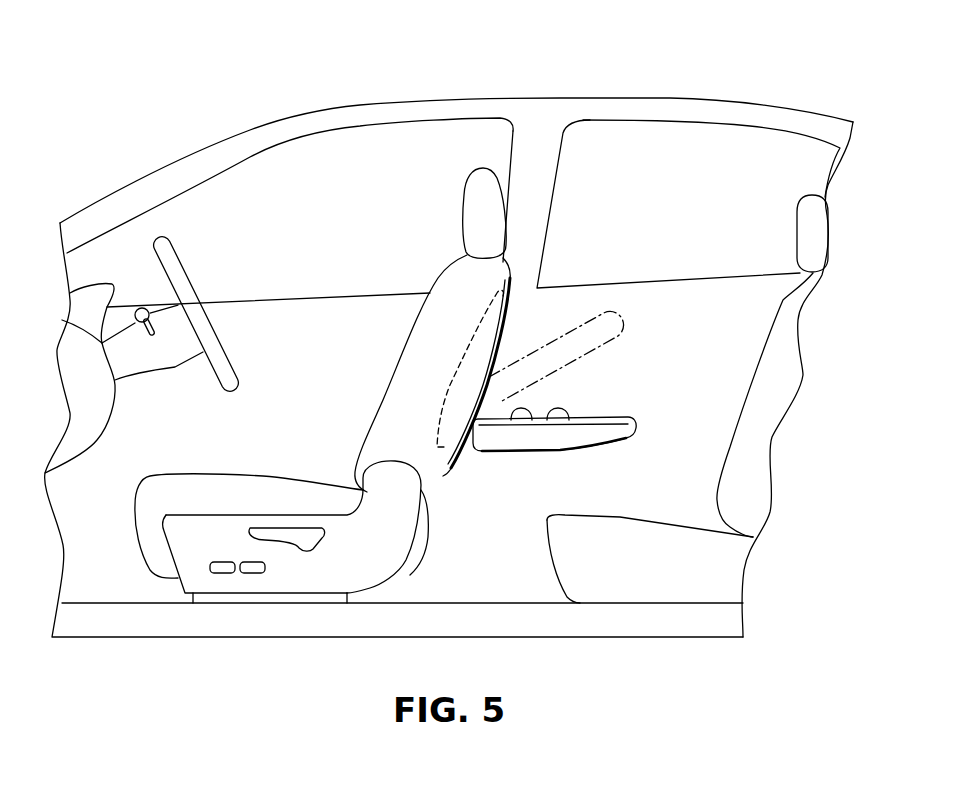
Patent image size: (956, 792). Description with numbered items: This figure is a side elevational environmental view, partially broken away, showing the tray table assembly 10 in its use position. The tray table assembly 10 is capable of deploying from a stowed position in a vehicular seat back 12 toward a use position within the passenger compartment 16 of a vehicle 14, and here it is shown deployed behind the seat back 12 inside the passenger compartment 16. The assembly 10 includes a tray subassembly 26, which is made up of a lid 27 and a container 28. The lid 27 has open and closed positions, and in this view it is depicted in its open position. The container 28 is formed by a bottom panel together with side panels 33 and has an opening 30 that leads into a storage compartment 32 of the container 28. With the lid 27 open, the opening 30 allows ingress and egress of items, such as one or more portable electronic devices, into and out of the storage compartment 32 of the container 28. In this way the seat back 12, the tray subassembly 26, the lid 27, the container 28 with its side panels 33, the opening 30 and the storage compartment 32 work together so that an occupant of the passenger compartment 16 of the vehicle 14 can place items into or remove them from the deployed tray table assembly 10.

The tray table assembly 10 is at (545, 305).
The vehicular seat back 12 is at (513, 267).
The vehicle 14 is at (540, 99).
The passenger compartment 16 is at (713, 302).
The tray subassembly 26 is at (601, 458).
The lid 27 is at (603, 338).
The container 28 is at (652, 429).
The opening 30 is at (511, 420).
The storage compartment 32 is at (569, 420).
The side panels 33 is at (543, 437).